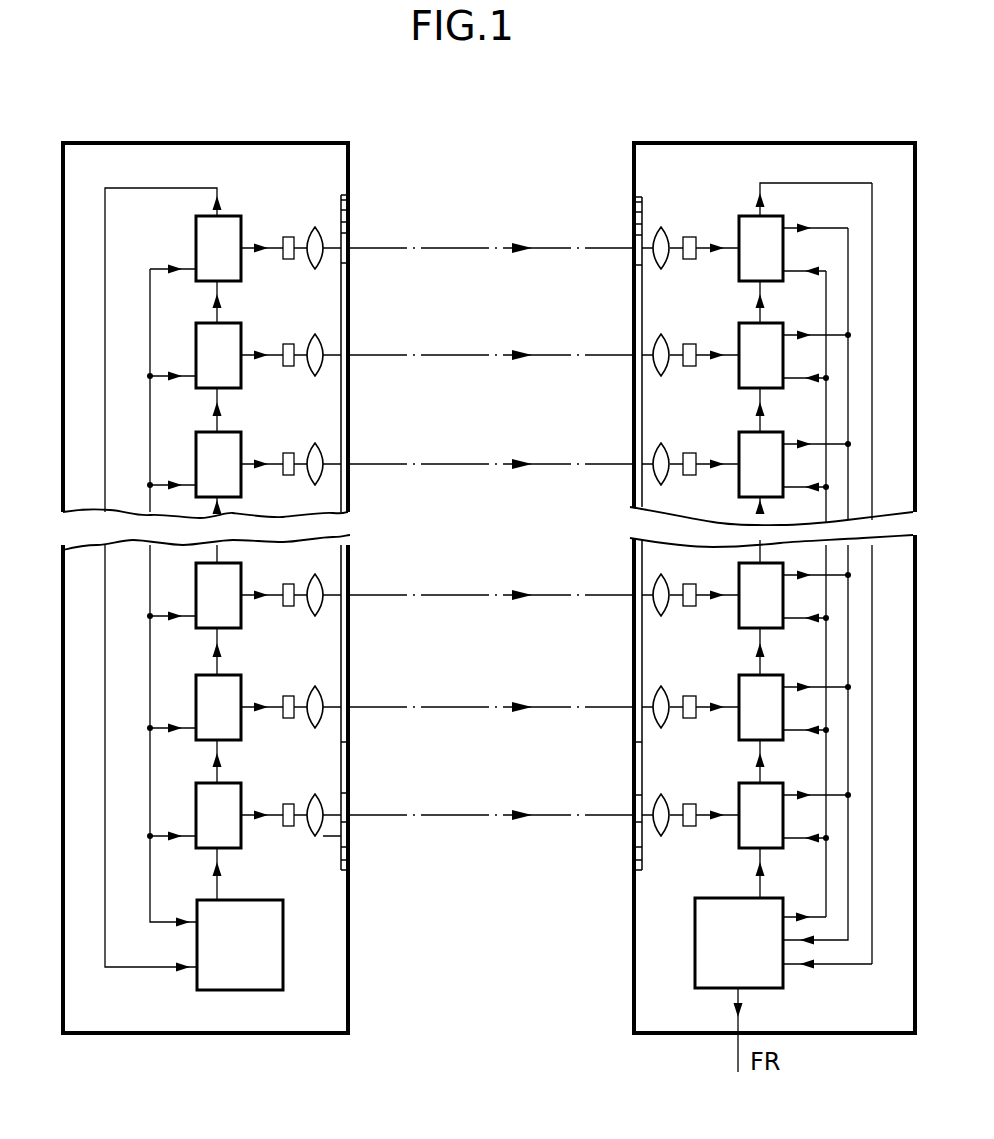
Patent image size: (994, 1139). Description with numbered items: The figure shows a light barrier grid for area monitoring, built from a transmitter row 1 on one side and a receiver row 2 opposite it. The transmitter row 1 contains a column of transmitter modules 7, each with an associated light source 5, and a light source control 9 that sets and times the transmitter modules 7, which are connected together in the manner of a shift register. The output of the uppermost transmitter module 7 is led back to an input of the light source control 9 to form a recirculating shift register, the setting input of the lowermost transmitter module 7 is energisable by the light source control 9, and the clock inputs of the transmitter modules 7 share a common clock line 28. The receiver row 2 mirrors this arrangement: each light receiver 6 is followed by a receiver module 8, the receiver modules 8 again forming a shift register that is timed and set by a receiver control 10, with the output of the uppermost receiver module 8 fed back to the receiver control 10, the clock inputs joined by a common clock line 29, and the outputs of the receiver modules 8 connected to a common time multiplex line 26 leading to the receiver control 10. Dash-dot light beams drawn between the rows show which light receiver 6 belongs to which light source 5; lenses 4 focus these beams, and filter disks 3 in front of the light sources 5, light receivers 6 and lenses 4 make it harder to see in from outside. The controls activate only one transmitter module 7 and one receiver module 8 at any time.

The transmitter row 1 is at (288, 136).
The receiver row 2 is at (694, 136).
The filter disks 3 is at (350, 218).
The lenses 4 is at (313, 238).
The light source 5 is at (288, 241).
The light receivers 6 is at (693, 240).
The transmitter modules 7 is at (226, 829).
The receiver modules 8 is at (768, 829).
The light source control 9 is at (232, 960).
The receiver control 10 is at (726, 958).
The time multiplex line 26 is at (852, 884).
The clock line 28 is at (150, 857).
The clock line 29 is at (826, 884).